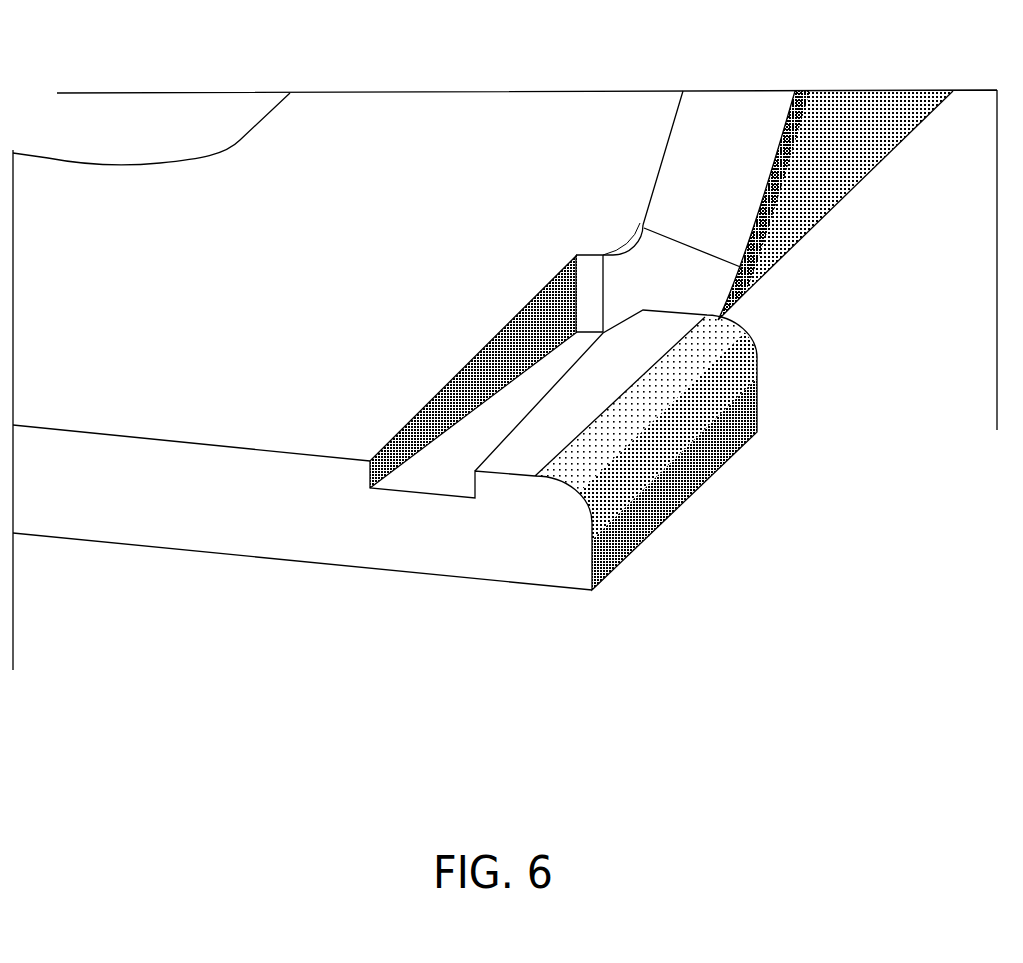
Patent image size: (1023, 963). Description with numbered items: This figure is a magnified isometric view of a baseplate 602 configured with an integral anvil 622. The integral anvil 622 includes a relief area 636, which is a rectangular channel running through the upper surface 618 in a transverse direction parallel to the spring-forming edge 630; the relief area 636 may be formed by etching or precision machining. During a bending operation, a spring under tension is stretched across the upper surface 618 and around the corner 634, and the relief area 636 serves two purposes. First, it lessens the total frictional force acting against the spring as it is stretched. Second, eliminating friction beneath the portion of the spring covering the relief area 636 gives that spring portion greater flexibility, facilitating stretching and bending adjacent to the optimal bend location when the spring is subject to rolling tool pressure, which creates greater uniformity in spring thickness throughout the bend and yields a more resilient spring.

The baseplate 602 is at (537, 30).
The upper surface 618 is at (252, 365).
The integral anvil 622 is at (505, 617).
The spring-forming edge 630 is at (773, 413).
The corner 634 is at (762, 338).
The relief area 636 is at (468, 520).